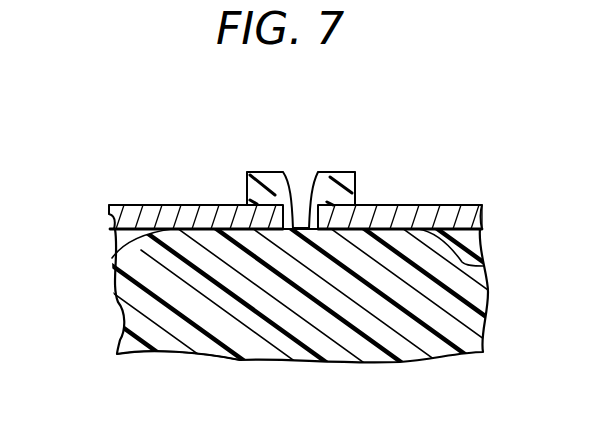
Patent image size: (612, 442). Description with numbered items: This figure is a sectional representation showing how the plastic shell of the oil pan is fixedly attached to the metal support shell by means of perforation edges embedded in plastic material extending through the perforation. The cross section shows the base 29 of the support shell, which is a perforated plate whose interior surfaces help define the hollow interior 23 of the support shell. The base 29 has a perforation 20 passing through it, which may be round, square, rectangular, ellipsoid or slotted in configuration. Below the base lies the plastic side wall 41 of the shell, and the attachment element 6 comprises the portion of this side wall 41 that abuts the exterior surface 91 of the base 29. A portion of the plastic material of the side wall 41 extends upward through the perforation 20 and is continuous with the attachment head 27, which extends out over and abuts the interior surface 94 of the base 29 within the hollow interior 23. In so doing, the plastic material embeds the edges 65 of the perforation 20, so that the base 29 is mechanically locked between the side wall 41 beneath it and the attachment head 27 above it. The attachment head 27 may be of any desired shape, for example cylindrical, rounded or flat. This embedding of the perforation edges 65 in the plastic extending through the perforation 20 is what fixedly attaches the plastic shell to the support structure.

The attachment element 6 is at (103, 372).
The perforation 20 is at (298, 215).
The hollow interior 23 is at (164, 113).
The attachment head 27 is at (304, 215).
The base 29 is at (173, 204).
The side wall 41 is at (447, 313).
The edges 65 is at (276, 172).
The exterior surface 91 is at (110, 257).
The interior surface 94 is at (134, 205).